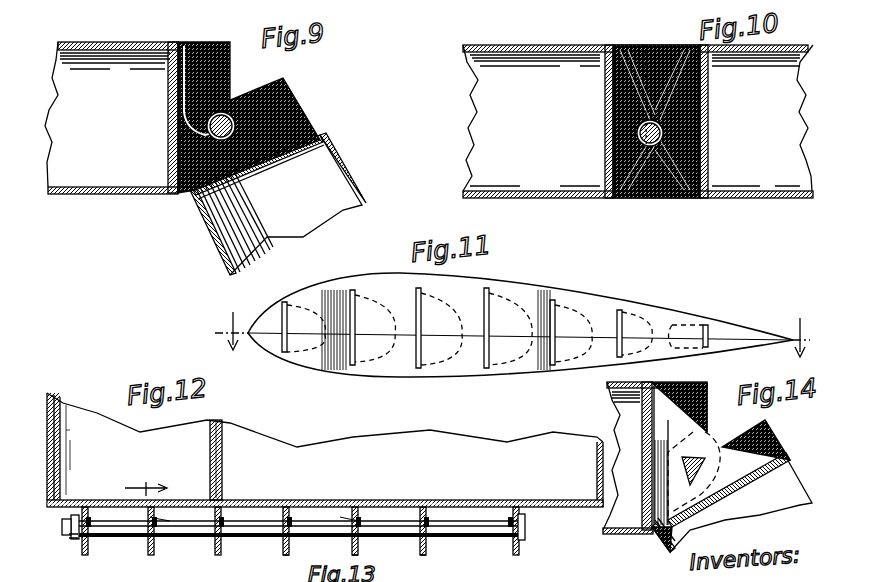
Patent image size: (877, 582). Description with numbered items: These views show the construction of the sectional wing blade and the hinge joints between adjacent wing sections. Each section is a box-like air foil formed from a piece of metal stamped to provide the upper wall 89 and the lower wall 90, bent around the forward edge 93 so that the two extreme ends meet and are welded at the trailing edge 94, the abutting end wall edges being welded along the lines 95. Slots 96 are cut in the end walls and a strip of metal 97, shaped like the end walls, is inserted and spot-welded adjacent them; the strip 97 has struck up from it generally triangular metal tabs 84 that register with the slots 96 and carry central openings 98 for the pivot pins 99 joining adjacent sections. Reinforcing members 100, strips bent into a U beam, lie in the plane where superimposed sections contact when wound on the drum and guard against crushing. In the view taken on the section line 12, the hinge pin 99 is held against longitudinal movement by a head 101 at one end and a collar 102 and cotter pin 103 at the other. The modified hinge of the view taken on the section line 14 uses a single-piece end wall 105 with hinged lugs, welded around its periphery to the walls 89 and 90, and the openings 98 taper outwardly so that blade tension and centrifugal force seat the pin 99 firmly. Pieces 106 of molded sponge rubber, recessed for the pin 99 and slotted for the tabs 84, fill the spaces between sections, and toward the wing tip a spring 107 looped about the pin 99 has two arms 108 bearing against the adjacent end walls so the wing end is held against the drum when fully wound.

In FIG. 11, the section line 12— 12 is at (514, 335).
In FIG. 12, the section line 14— 14 is at (146, 478).
In FIG. 12, the metal tabs 84 is at (283, 548).
In FIG. 9, the upper wall 89 is at (146, 42).
In FIG. 10, the upper wall 89 is at (552, 45).
In FIG. 11, the upper wall 89 is at (598, 296).
In FIG. 12, the upper wall 89 is at (607, 382).
In FIG. 14, the upper wall 89 is at (607, 386).
In FIG. 9, the lower wall 90 is at (80, 192).
In FIG. 10, the lower wall 90 is at (522, 198).
In FIG. 11, the lower wall 90 is at (507, 375).
In FIG. 14, the lower wall 90 is at (604, 532).
In FIG. 11, the forward edge 93 is at (248, 333).
In FIG. 11, the trailing edge 94 is at (793, 340).
In FIG. 9, the welding lines 95 is at (180, 118).
In FIG. 10, the welding lines 95 is at (606, 139).
In FIG. 11, the welding lines 95 is at (472, 345).
In FIG. 11, the slots 96 is at (420, 305).
In FIG. 9, the strip of metal 97 is at (170, 158).
In FIG. 10, the strip of metal 97 is at (606, 109).
In FIG. 12, the strip of metal 97 is at (405, 500).
In FIG. 14, the strip of metal 97 is at (642, 420).
In FIG. 10, the central openings 98 is at (632, 198).
In FIG. 12, the central openings 98 is at (152, 518).
In FIG. 14, the central openings 98 is at (683, 460).
In FIG. 9, the pivot pins 99 is at (233, 112).
In FIG. 10, the pivot pins 99 is at (708, 152).
In FIG. 12, the pivot pins 99 is at (385, 540).
In FIG. 14, the pivot pins 99 is at (697, 458).
In FIG. 12, the reinforcing members 100 is at (222, 465).
In FIG. 12, the head 101 is at (526, 536).
In FIG. 12, the collar 102 is at (68, 540).
In FIG. 12, the cotter pin 103 is at (65, 509).
In FIG. 14, the end wall 105 is at (655, 436).
In FIG. 9, the pieces of molded sponge rubber 106 is at (232, 42).
In FIG. 10, the pieces of molded sponge rubber 106 is at (708, 178).
In FIG. 14, the pieces of molded sponge rubber 106 is at (680, 390).
In FIG. 9, the spring 107 is at (176, 132).
In FIG. 9, the arms 108 is at (180, 84).